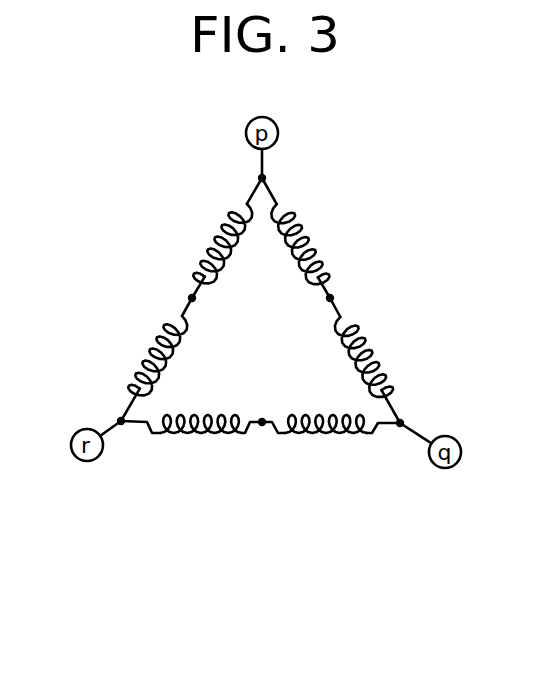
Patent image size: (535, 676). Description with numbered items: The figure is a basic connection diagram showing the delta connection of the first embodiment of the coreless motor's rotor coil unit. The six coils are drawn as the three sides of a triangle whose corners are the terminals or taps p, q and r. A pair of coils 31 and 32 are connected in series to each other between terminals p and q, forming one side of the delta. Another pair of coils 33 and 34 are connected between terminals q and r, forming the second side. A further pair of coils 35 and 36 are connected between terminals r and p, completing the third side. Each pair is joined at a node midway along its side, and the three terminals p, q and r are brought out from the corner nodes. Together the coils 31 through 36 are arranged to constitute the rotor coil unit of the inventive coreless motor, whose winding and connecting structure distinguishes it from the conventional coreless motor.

The coil 31 is at (317, 242).
The coil 32 is at (375, 352).
The coil 33 is at (312, 437).
The coil 34 is at (202, 434).
The coil 35 is at (140, 365).
The coil 36 is at (207, 252).